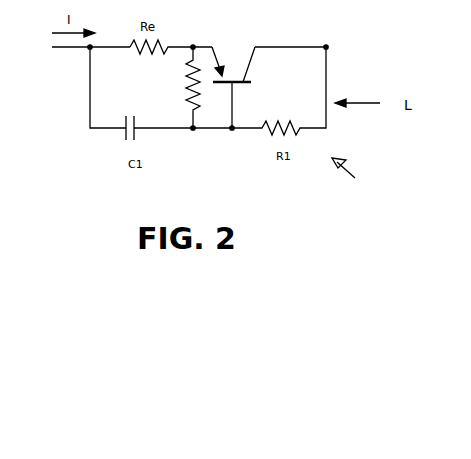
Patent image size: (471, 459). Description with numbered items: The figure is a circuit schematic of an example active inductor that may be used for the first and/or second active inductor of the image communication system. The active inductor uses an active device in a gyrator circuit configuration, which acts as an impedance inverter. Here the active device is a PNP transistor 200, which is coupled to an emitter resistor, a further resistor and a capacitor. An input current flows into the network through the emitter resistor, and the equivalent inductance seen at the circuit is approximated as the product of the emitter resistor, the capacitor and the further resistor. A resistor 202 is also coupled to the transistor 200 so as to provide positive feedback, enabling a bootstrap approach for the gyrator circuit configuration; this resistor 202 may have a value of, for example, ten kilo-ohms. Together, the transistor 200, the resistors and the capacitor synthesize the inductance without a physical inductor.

The PNP transistor 200 is at (233, 71).
The resistor 202 is at (171, 88).